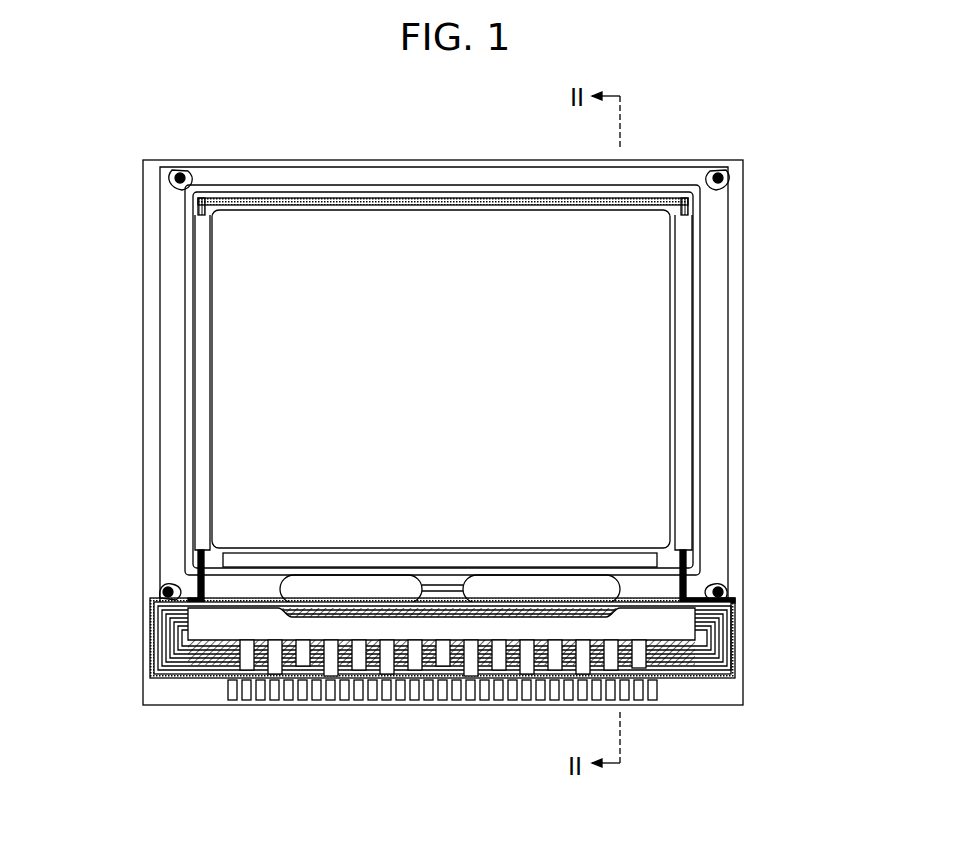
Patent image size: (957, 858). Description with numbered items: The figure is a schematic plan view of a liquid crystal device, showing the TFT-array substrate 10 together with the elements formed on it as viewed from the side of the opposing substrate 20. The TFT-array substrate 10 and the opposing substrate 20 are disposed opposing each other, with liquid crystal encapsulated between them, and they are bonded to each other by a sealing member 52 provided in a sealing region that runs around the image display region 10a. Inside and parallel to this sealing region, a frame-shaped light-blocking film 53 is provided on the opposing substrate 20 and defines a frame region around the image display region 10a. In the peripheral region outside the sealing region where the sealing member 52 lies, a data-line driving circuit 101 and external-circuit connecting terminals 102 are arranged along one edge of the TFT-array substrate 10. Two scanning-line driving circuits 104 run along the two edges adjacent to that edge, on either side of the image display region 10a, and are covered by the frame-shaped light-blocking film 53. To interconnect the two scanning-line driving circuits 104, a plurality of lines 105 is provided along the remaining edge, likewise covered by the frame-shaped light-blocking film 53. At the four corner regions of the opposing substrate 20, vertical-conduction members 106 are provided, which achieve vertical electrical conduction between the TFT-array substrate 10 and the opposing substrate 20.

The TFT-array substrate 10 is at (265, 160).
The image display region 10a is at (258, 335).
The opposing substrate 20 is at (463, 160).
The sealing member 52 is at (715, 312).
The frame-shaped light-blocking film 53 is at (690, 560).
The data-line driving circuit 101 is at (210, 630).
The external-circuit connecting terminals 102 is at (406, 700).
The scanning-line driving circuits 104 is at (688, 383).
The lines 105 is at (367, 205).
The vertical-conduction members 106 is at (200, 165).